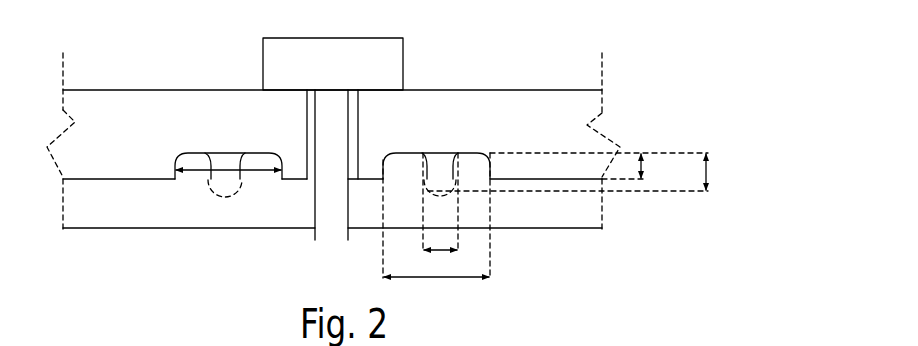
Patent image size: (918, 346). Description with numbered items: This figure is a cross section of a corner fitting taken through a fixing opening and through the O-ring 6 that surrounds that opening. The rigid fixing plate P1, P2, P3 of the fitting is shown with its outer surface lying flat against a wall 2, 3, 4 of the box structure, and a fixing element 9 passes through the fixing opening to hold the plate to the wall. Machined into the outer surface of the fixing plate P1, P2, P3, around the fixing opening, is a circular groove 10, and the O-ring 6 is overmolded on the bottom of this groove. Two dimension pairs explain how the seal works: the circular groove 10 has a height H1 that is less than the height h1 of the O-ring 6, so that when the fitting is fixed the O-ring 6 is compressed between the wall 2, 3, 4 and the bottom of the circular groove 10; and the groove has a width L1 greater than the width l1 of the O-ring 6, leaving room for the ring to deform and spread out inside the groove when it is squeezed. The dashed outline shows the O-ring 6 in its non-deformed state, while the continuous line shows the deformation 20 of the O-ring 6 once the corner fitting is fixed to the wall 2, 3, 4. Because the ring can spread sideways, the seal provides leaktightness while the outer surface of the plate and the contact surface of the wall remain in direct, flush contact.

The wall 2 is at (401, 214).
The wall 3 is at (401, 214).
The wall 4 is at (563, 205).
The O-ring 6 is at (224, 163).
The fixing element 9 is at (378, 62).
The circular groove 10 is at (182, 153).
The deformation 20 is at (205, 180).
The fixing plate P1 is at (418, 116).
The fixing plate P2 is at (418, 116).
The fixing plate P3 is at (547, 117).
The width of the circular groove L1 is at (259, 168).
The width of the O-ring l1 is at (438, 251).
The height of the circular groove H1 is at (646, 164).
The height of the O-ring h1 is at (709, 172).